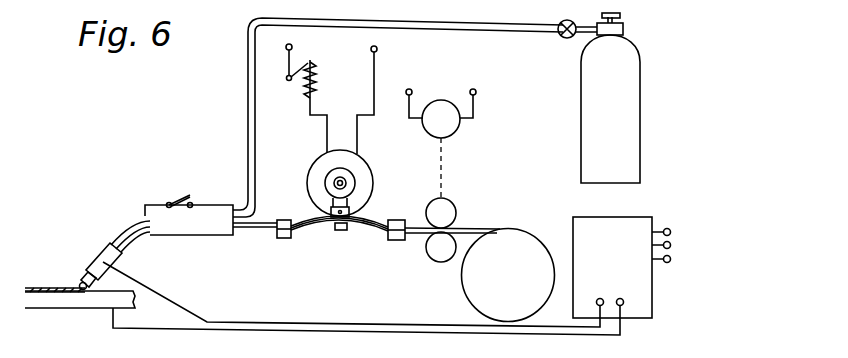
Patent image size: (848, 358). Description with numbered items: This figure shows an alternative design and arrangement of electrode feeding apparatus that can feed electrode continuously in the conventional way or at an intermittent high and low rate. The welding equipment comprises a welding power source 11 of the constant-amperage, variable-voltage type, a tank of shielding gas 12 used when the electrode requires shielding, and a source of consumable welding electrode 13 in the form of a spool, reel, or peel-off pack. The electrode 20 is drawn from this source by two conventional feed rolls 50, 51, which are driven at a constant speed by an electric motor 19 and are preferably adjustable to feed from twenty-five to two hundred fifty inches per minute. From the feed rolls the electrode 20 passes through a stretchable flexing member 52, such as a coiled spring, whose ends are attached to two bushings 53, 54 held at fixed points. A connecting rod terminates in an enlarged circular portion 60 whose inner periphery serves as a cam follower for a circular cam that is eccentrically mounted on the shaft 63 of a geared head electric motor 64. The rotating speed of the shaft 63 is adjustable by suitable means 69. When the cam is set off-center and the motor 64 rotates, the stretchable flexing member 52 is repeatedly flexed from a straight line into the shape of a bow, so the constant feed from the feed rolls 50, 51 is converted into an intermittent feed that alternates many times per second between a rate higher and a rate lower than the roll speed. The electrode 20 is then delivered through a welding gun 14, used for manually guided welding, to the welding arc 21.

The welding power source 11 is at (647, 289).
The tank of shielding gas 12 is at (627, 106).
The source of consumable welding electrode 13 is at (528, 233).
The welding gun 14 is at (127, 210).
The electric motor 19 is at (458, 132).
The electrode 20 is at (248, 228).
The welding arc 21 is at (74, 277).
The feed roll 50 is at (455, 205).
The feed roll 51 is at (437, 262).
The stretchable flexing member 52 is at (322, 228).
The bushing 53 is at (283, 239).
The bushing 54 is at (395, 240).
The enlarged circular portion 60 is at (340, 178).
The shaft 63 is at (348, 183).
The geared head electric motor 64 is at (365, 170).
The speed adjusting means 69 is at (310, 80).